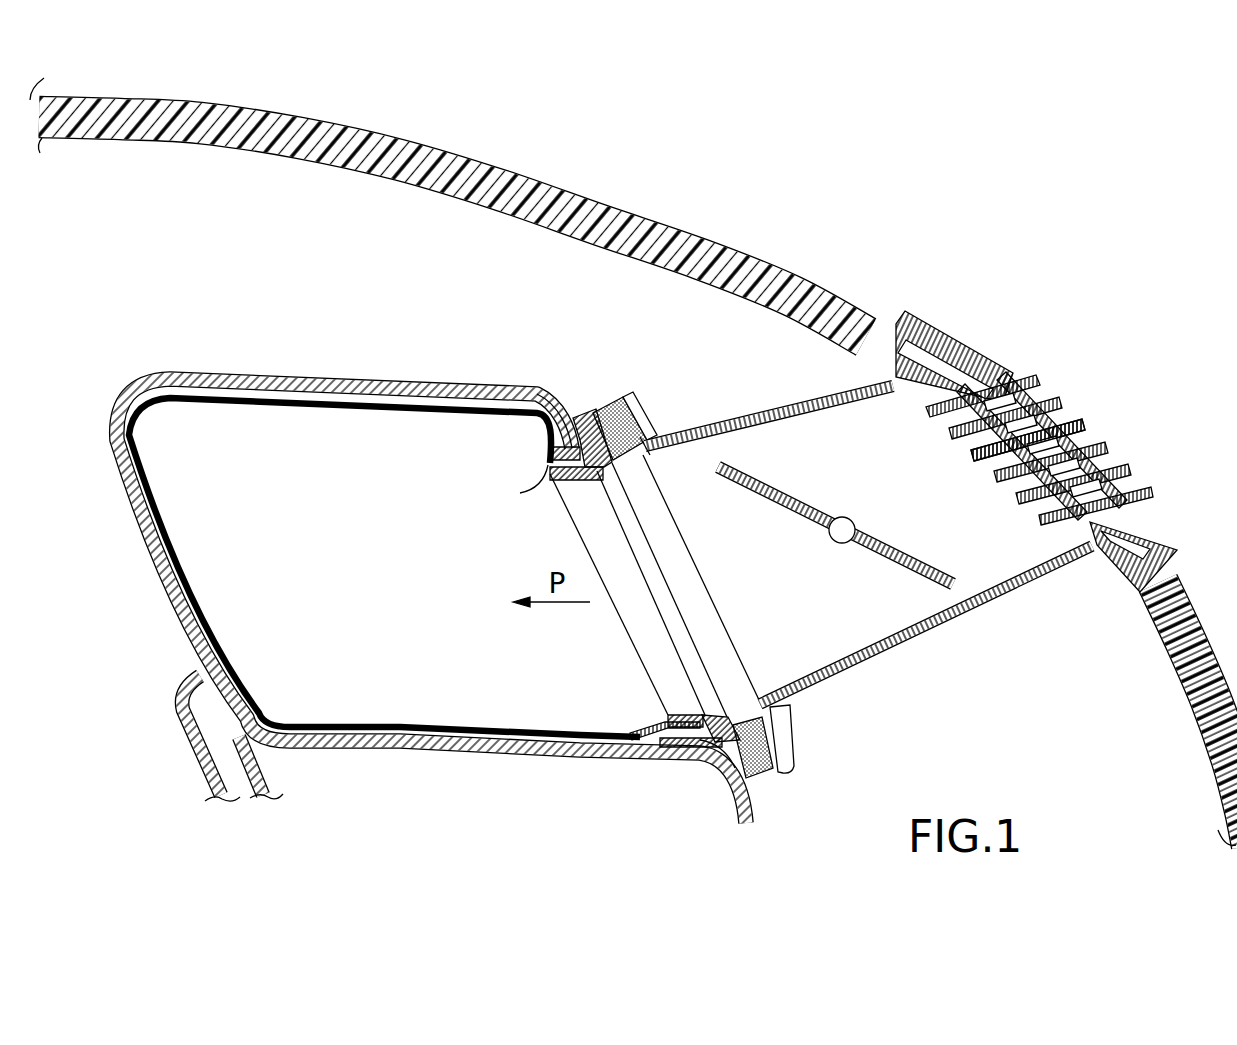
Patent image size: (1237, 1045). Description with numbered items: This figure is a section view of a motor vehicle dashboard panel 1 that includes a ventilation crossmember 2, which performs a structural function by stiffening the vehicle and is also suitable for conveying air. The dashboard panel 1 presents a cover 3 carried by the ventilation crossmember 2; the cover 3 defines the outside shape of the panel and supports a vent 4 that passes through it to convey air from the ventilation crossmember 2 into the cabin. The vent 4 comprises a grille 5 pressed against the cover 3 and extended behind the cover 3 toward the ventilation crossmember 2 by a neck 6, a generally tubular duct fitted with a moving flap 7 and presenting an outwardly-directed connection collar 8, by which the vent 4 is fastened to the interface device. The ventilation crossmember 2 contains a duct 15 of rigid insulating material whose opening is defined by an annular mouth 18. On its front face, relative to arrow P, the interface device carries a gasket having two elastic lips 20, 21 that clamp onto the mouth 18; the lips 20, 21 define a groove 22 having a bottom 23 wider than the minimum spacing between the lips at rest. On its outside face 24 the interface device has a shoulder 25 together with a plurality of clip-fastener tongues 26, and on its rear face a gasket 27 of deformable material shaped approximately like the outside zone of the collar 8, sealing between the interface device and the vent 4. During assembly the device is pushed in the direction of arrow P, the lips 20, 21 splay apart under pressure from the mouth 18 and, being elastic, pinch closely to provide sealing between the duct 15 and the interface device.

The dashboard panel 1 is at (752, 232).
The ventilation crossmember 2 is at (337, 352).
The cover 3 is at (820, 283).
The vent 4 is at (1060, 368).
The grille 5 is at (1084, 428).
The neck 6 is at (905, 640).
The moving flap 7 is at (783, 502).
The connection collar 8 is at (652, 430).
The duct 15 is at (270, 408).
The annular mouth 18 is at (547, 463).
The lip 20 is at (550, 482).
The lip 21 is at (552, 455).
The groove 22 is at (702, 715).
The bottom 23 is at (720, 760).
The outside face 24 is at (553, 447).
The shoulder 25 is at (577, 440).
The clip-fastener tongue 26 is at (572, 418).
The gasket 27 is at (603, 413).